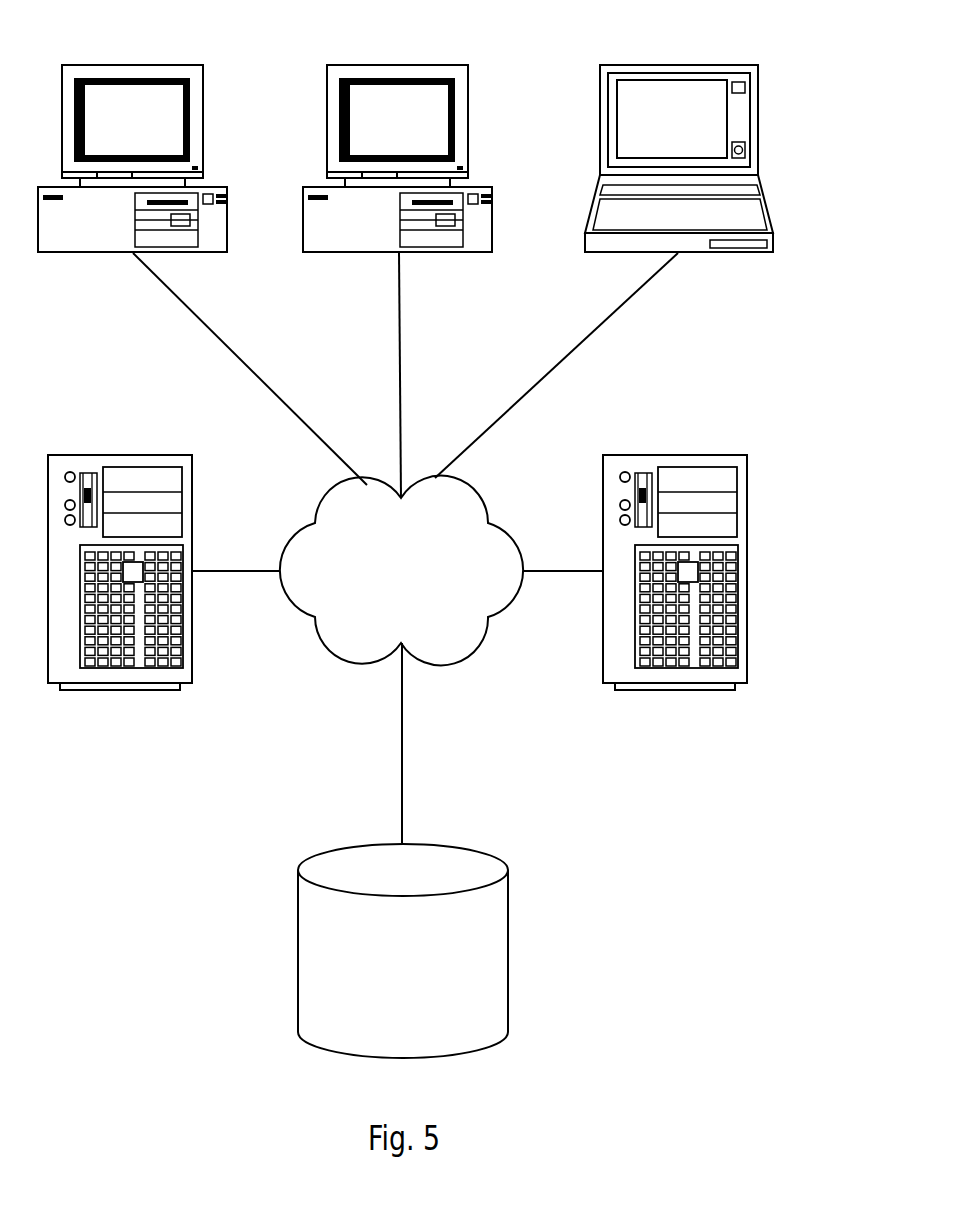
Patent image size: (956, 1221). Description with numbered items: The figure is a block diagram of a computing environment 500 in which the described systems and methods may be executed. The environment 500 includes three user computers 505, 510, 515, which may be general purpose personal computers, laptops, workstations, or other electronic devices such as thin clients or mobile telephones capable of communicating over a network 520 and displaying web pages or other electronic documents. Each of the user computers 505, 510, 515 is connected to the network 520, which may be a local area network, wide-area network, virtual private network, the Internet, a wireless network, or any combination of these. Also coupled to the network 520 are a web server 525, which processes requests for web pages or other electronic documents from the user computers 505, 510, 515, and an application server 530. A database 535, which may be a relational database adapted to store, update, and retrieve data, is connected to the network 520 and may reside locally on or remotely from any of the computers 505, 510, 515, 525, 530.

The computing environment 500 is at (688, 893).
The user computer 505 is at (227, 253).
The user computer 510 is at (492, 253).
The user computer 515 is at (773, 253).
The network 520 is at (457, 660).
The web server 525 is at (192, 652).
The application server 530 is at (745, 652).
The database 535 is at (508, 948).